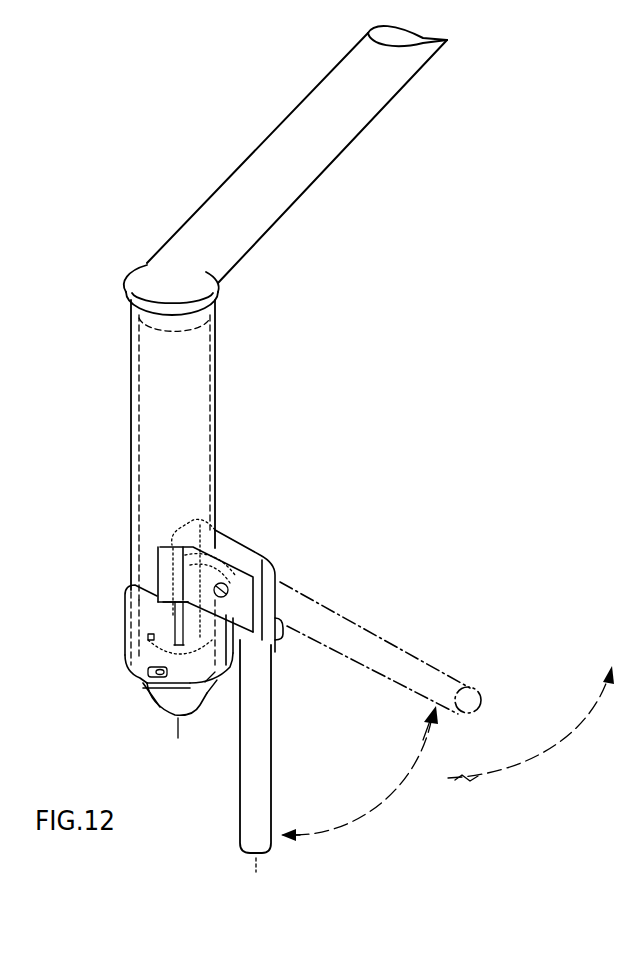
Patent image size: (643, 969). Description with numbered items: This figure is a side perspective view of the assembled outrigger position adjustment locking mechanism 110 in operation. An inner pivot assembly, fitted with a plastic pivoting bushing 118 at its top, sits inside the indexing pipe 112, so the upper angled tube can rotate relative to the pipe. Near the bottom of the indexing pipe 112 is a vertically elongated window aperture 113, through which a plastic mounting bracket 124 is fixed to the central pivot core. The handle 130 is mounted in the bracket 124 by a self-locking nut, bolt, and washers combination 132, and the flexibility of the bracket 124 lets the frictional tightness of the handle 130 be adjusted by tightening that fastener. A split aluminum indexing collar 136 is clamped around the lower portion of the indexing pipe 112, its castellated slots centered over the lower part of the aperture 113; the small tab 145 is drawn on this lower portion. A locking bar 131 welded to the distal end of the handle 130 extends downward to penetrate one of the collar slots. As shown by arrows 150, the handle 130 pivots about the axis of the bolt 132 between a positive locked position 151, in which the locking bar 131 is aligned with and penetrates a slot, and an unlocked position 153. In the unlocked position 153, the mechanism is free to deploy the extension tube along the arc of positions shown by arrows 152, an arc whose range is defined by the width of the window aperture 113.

The rod holder assembly 110 is at (120, 402).
The pivoting bushing 118 is at (218, 287).
The indexing pipe 112 is at (215, 415).
The mounting bracket 124 is at (215, 530).
The self-locking nut, bolt, and washers combination 132 is at (227, 585).
The vertically elongated window aperture 113 is at (172, 563).
The retaining tab 145 is at (175, 637).
The split aluminum indexing collar 136 is at (180, 670).
The locking bar extension 131 is at (213, 685).
The handle 130 is at (248, 818).
The positive locked position 151 is at (288, 847).
The arrows 150 is at (366, 808).
The unlocked position 153 is at (444, 725).
The arrows 152 is at (473, 703).